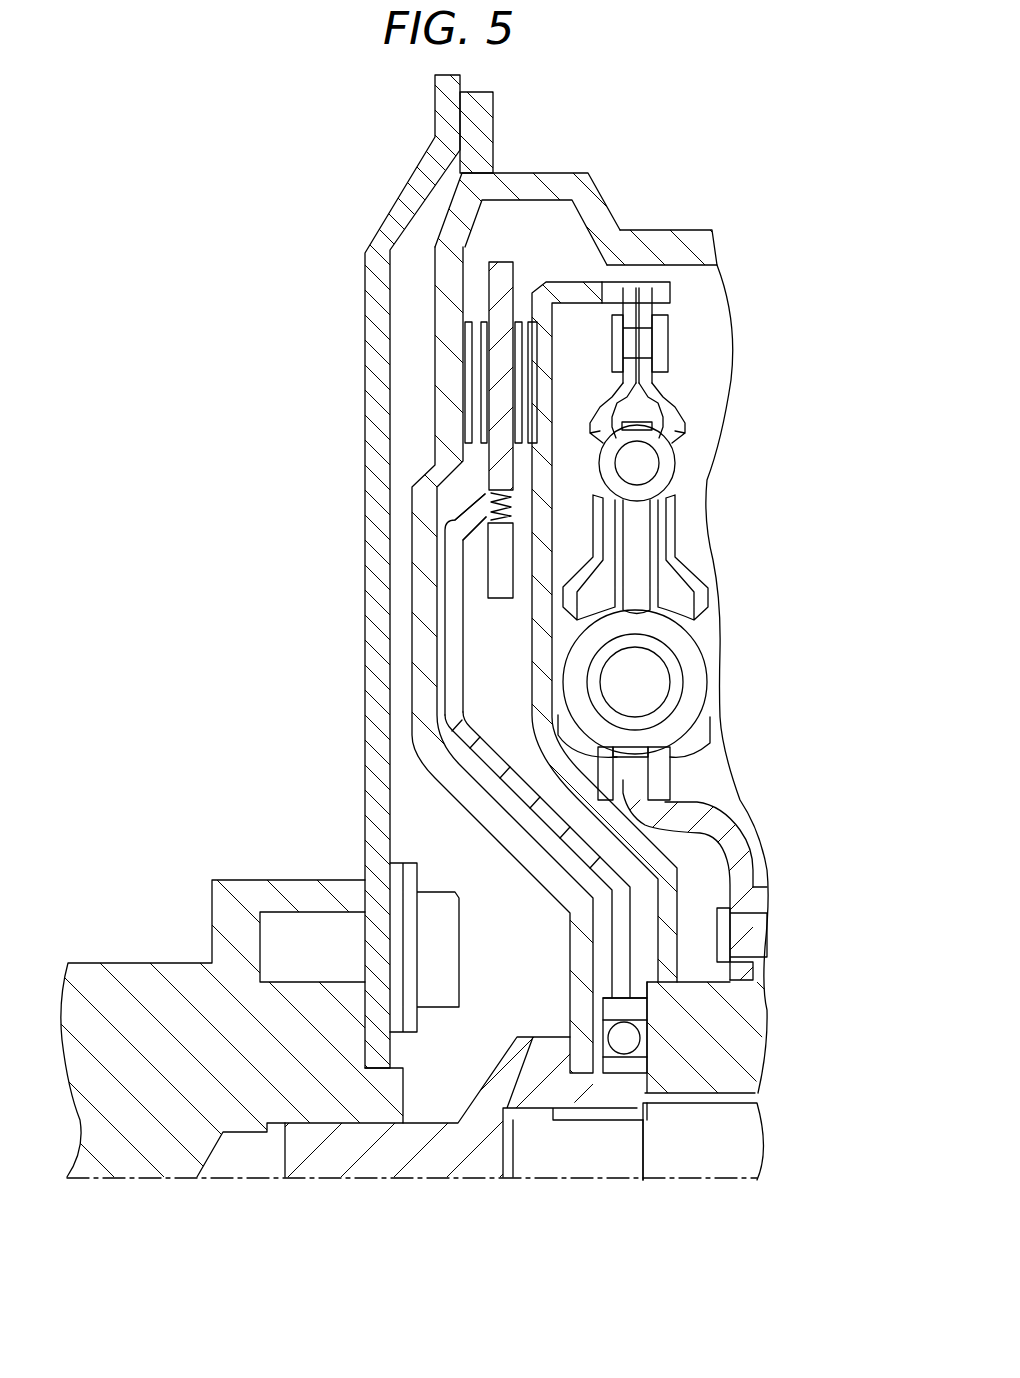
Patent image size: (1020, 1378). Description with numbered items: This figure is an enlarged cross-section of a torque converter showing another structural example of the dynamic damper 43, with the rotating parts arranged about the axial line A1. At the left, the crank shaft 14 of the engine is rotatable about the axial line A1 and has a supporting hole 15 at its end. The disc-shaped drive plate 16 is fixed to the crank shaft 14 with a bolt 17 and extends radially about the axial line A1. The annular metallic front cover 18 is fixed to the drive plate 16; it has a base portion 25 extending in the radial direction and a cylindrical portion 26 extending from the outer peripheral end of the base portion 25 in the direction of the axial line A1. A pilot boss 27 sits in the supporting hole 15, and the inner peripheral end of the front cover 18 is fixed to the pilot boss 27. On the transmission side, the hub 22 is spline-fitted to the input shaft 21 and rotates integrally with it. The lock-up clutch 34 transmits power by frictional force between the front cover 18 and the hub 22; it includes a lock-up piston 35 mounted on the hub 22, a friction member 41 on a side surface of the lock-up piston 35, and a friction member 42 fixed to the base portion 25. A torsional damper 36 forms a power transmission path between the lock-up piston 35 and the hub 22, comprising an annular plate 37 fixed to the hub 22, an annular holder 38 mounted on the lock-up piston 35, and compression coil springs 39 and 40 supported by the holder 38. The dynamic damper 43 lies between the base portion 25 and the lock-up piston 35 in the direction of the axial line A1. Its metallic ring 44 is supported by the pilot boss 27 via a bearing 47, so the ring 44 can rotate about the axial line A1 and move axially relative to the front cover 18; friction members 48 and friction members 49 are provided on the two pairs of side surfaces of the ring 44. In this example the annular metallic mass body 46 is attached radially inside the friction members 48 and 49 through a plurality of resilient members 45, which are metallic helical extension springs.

The crank shaft 14 is at (145, 968).
The supporting hole 15 is at (237, 1165).
The drive plate 16 is at (375, 455).
The bolt 17 is at (327, 930).
The front cover 18 is at (547, 175).
The input shaft 21 is at (688, 1172).
The hub 22 is at (740, 1028).
The base portion 25 is at (435, 490).
The cylindrical portion 26 is at (697, 247).
The pilot boss 27 is at (332, 1165).
The lock-up clutch 34 is at (477, 313).
The lock-up piston 35 is at (543, 648).
The torsional damper 36 is at (677, 393).
The annular plate 37 is at (735, 840).
The annular holder 38 is at (665, 527).
The compression coil spring 39 is at (665, 468).
The compression coil spring 40 is at (700, 685).
The friction member 41 is at (530, 407).
The friction member 42 is at (466, 325).
The dynamic damper 43 is at (478, 474).
The ring 44 is at (455, 603).
The resilient member 45 is at (465, 527).
The mass body 46 is at (500, 570).
The bearing 47 is at (610, 1077).
The friction member 48 is at (483, 345).
The friction member 49 is at (516, 375).
The axial line A1 is at (745, 1182).